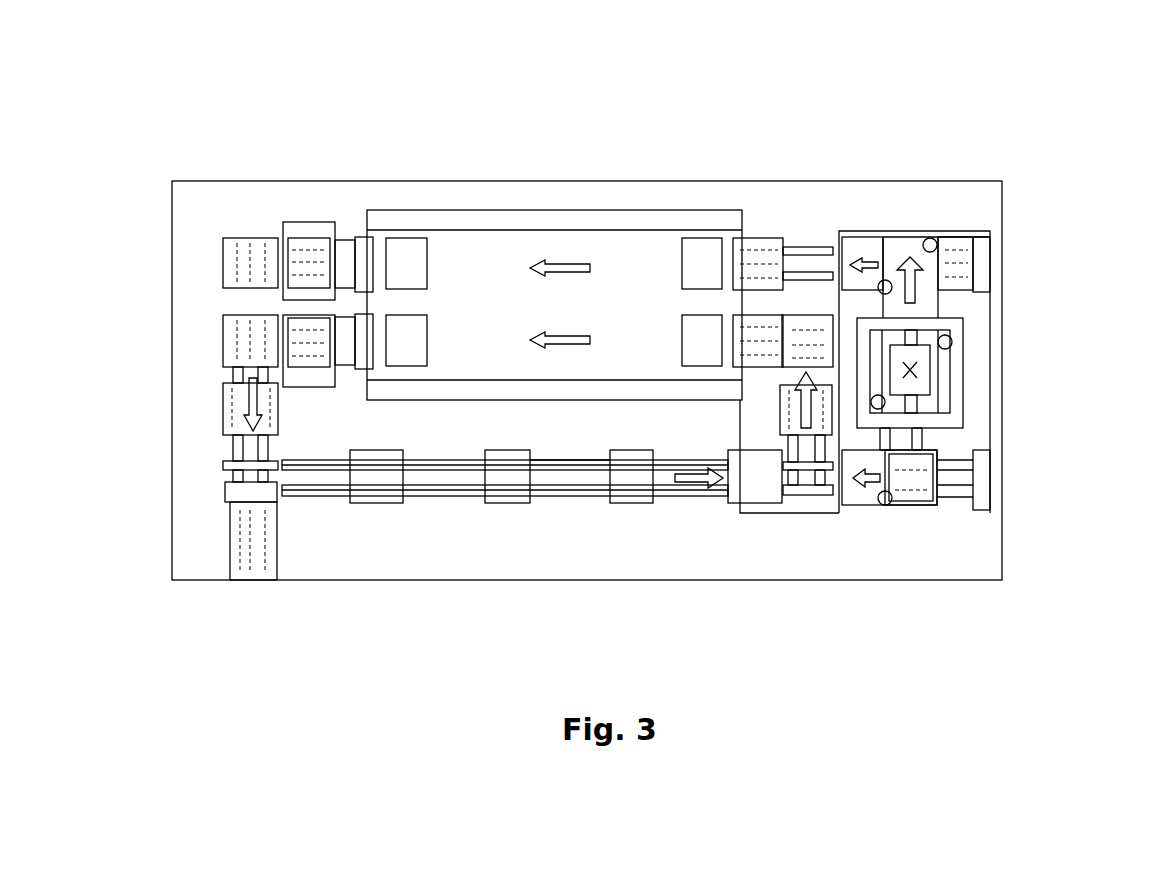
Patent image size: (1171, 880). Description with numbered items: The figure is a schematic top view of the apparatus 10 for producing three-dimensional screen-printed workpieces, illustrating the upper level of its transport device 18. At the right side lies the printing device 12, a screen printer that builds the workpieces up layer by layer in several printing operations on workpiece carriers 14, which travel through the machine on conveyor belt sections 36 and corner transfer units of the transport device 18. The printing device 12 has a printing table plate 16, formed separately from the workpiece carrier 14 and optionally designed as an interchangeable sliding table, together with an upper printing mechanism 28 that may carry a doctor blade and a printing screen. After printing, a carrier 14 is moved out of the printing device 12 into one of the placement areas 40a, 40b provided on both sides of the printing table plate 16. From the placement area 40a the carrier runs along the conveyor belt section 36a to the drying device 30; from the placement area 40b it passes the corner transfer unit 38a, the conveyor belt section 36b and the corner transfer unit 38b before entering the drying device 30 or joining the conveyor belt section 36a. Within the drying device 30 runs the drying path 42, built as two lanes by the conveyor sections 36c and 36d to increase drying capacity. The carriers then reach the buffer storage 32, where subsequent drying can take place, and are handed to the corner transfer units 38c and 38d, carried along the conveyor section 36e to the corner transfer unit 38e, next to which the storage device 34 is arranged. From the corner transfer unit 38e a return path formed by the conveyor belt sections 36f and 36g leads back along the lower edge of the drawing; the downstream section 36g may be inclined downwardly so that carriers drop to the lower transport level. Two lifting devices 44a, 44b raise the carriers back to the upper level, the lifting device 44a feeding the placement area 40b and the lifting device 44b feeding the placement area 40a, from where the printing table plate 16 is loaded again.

The apparatus 10 is at (604, 362).
The printing device 12 is at (604, 390).
The workpiece carrier 14 is at (566, 558).
The printing table plate 16 is at (1007, 394).
The transport device 18 is at (505, 566).
The upper printing mechanism 28 is at (991, 374).
The drying device 30 is at (554, 252).
The buffer storage 32 is at (335, 267).
The storage device 34 is at (184, 533).
The conveyor belt section 36 is at (505, 571).
The conveyor belt section 36a is at (829, 235).
The conveyor belt section 36b is at (756, 417).
The conveyor section 36c is at (588, 266).
The conveyor section 36d is at (589, 338).
The conveyor section 36e is at (173, 414).
The conveyor belt section 36f is at (565, 563).
The conveyor belt section 36g is at (697, 569).
The corner transfer unit 38a is at (826, 565).
The corner transfer unit 38b is at (766, 235).
The corner transfer unit 38c is at (173, 263).
The corner transfer unit 38d is at (173, 336).
The corner transfer unit 38e is at (173, 486).
The placement area 40a is at (989, 308).
The placement area 40b is at (990, 549).
The drying path 42 is at (554, 235).
The lifting device 44a is at (990, 480).
The lifting device 44b is at (991, 277).